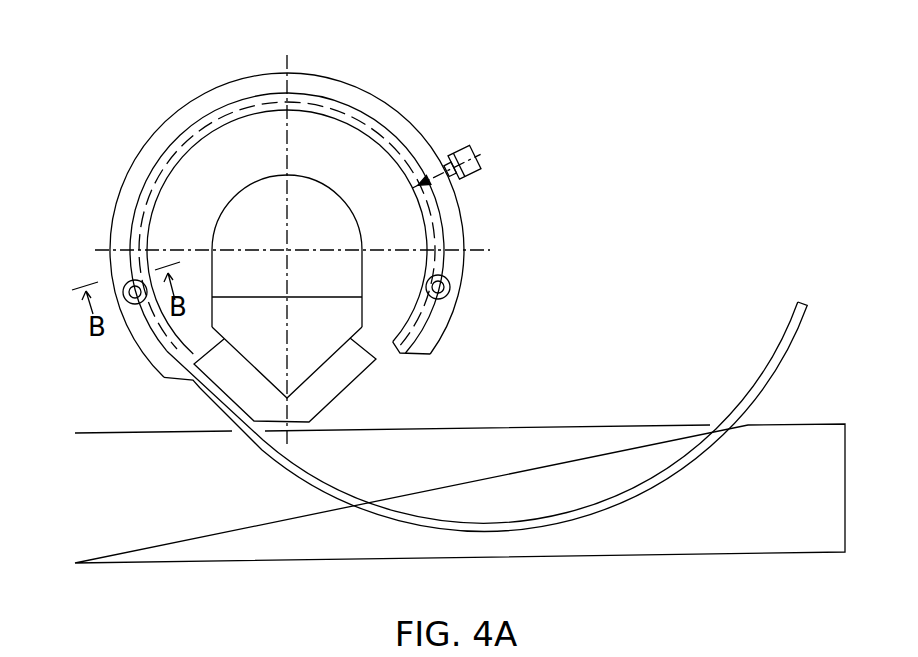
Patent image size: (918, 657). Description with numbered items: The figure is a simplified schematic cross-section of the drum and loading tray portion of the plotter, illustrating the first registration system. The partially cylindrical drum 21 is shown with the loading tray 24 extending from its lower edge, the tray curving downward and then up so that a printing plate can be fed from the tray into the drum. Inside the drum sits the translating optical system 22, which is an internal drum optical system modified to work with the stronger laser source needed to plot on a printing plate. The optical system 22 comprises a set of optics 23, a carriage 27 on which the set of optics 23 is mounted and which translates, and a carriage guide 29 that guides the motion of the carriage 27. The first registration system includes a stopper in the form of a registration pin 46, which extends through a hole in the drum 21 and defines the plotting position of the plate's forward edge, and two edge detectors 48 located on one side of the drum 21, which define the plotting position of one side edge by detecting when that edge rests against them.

The drum 21 is at (330, 88).
The translating optical system 22 is at (300, 172).
The set of optics 23 is at (340, 215).
The loading tray 24 is at (767, 365).
The carriage 27 is at (340, 315).
The carriage guide 29 is at (345, 367).
The registration pin 46 is at (472, 150).
The edge detectors 48 is at (125, 288).